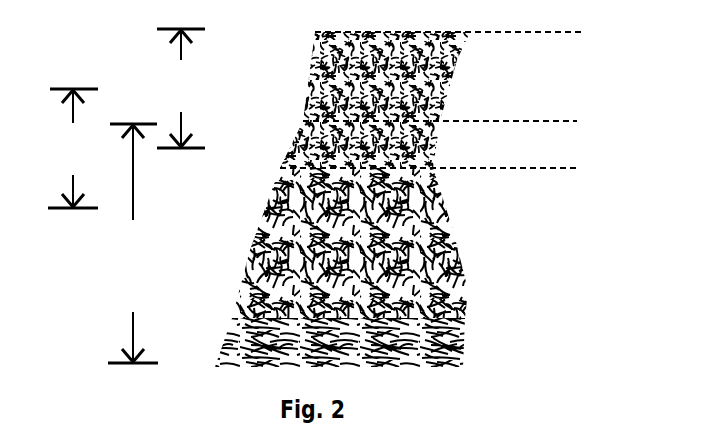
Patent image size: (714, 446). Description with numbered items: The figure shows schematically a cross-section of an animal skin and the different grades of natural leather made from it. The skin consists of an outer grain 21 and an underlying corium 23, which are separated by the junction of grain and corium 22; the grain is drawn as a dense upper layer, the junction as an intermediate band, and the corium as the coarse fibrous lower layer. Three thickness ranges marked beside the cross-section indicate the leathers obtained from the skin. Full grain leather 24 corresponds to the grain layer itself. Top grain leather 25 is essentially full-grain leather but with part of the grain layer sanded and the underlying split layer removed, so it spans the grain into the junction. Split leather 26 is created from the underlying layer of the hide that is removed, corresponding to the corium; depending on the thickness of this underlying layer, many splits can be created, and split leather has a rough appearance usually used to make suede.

The grain 21 is at (442, 76).
The junction of grain and corium 22 is at (429, 144).
The corium 23 is at (378, 267).
The full grain leather 24 is at (181, 88).
The top grain leather 25 is at (73, 148).
The split leather 26 is at (133, 243).